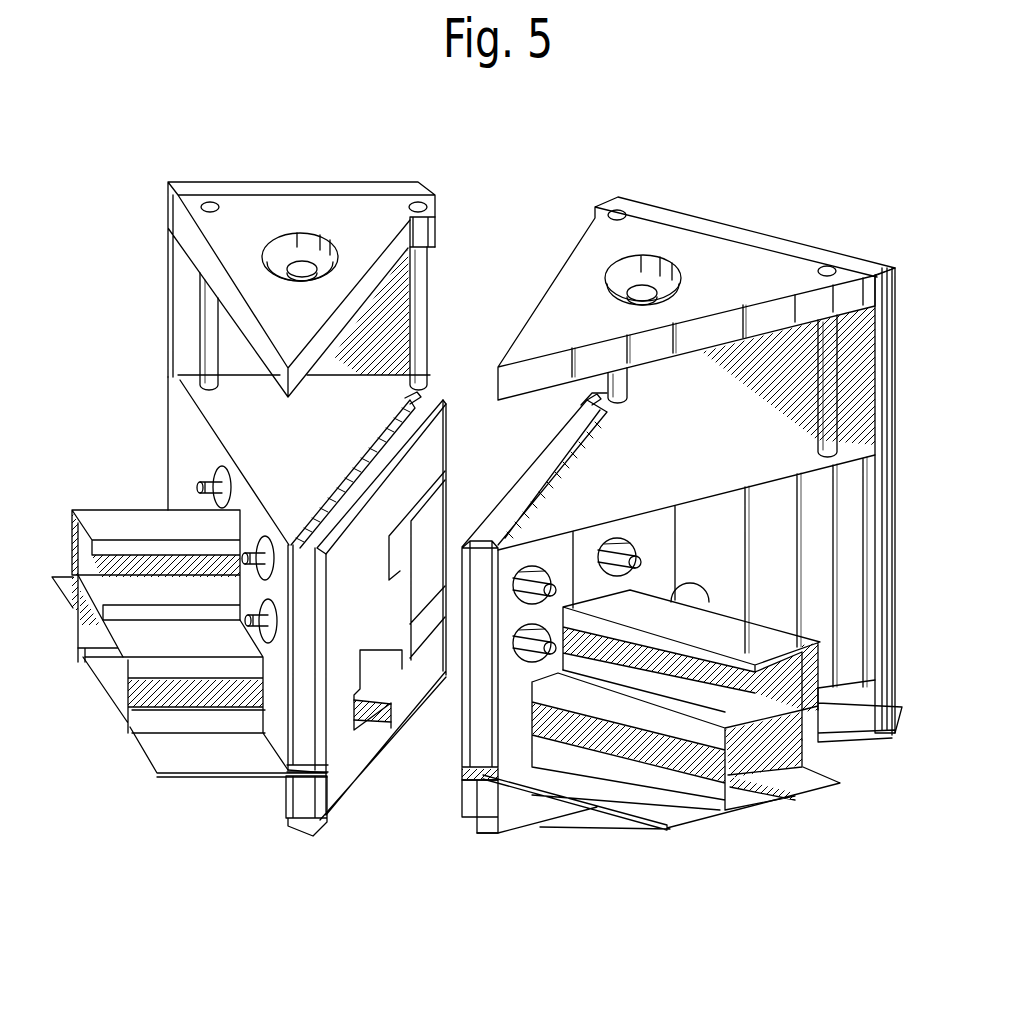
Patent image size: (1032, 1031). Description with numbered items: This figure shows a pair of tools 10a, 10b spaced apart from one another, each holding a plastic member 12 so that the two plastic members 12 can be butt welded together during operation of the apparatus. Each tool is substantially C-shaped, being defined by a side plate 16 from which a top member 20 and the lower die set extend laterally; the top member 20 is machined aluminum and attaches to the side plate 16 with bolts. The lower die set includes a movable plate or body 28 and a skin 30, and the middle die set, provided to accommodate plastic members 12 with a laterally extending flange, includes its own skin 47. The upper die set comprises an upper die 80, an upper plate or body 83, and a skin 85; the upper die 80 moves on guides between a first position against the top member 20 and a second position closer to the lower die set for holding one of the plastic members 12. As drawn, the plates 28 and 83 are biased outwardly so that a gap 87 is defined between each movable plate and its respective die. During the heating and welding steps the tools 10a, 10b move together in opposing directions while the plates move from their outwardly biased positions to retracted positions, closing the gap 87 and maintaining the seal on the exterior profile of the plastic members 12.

The tool 10a is at (721, 178).
The tool 10b is at (369, 168).
The plastic member 12 is at (217, 753).
The side plate 16 is at (885, 394).
The top member 20 is at (733, 253).
The plate or body 28 is at (303, 808).
The skin 30 is at (374, 733).
The skin 47 is at (441, 640).
The upper die 80 is at (535, 572).
The upper plate or body 83 is at (428, 380).
The skin 85 is at (428, 457).
The gap 87 is at (398, 412).